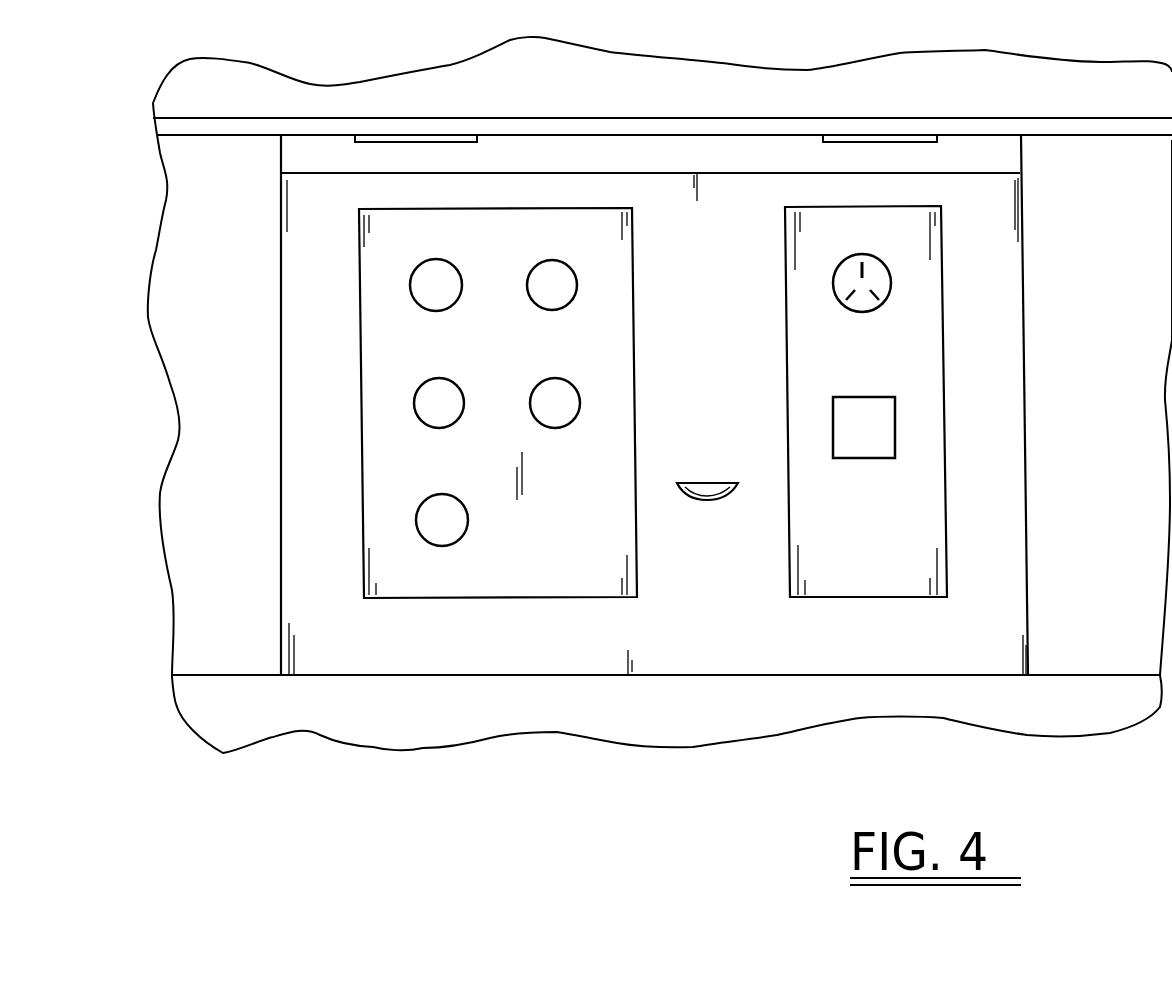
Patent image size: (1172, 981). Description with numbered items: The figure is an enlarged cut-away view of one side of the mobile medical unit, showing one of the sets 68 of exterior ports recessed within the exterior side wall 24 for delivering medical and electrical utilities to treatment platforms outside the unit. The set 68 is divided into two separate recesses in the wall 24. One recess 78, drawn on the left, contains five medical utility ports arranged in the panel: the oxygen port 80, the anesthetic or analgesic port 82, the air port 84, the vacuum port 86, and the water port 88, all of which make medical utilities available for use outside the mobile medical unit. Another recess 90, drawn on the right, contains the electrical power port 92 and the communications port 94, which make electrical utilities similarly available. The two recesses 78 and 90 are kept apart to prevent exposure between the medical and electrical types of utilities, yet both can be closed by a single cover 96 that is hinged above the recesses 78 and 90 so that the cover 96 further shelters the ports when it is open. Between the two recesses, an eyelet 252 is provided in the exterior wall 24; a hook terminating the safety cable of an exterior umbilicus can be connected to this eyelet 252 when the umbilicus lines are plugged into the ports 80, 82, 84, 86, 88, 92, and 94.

The exterior side wall 24 is at (1092, 375).
The set of exterior ports 68 is at (1025, 262).
The cover 96 is at (292, 152).
The recess 78 is at (632, 511).
The oxygen port 80 is at (432, 262).
The anesthetic or analgesic port 82 is at (542, 262).
The air port 84 is at (432, 380).
The vacuum port 86 is at (553, 380).
The water port 88 is at (440, 495).
The eyelet 252 is at (705, 505).
The recess 90 is at (945, 522).
The electrical power port 92 is at (892, 241).
The communications port 94 is at (860, 397).